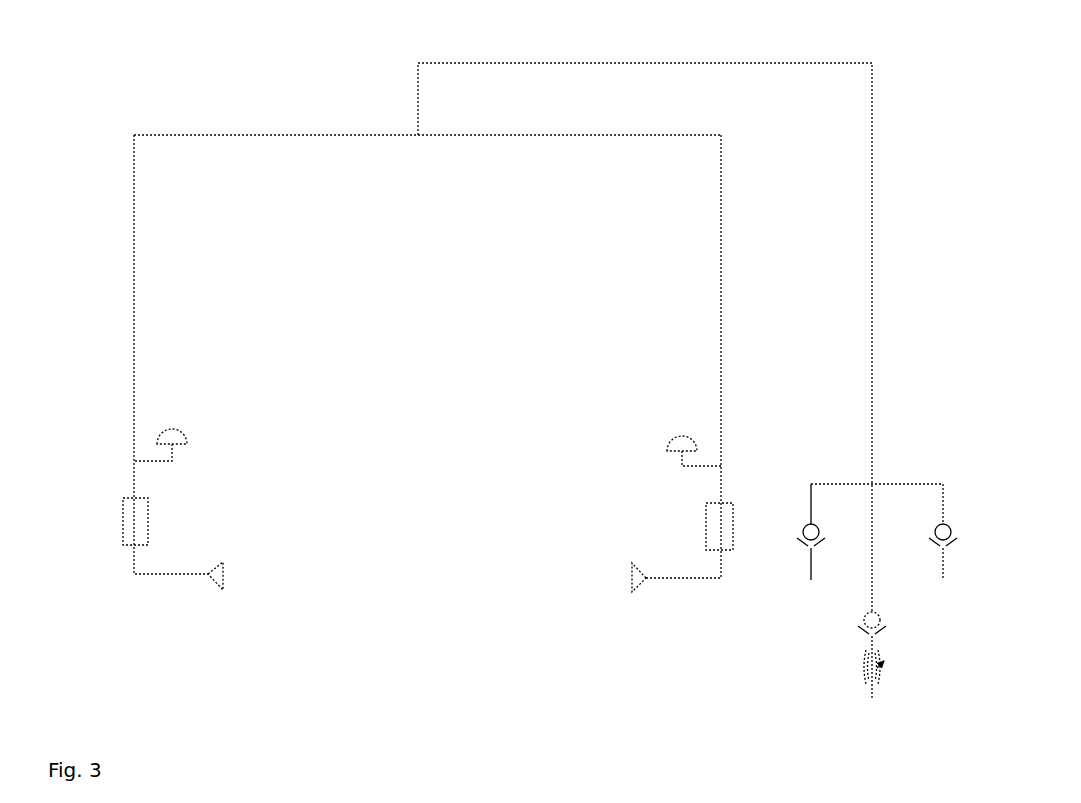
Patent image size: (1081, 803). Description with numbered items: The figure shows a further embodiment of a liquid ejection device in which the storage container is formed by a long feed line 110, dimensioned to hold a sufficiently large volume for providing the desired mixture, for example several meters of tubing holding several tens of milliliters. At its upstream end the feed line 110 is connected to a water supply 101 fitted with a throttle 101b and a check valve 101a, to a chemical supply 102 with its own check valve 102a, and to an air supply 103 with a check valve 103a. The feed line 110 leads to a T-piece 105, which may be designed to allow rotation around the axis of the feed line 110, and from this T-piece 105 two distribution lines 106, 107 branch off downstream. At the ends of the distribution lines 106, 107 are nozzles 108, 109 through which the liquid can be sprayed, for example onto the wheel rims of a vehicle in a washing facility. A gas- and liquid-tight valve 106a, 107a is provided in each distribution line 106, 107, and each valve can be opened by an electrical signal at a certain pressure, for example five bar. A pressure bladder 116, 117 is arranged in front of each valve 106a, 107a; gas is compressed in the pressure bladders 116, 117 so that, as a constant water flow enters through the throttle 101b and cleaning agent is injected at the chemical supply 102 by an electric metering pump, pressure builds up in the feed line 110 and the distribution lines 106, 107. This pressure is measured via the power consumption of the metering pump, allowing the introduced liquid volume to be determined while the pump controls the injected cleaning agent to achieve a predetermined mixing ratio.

The water supply 101 is at (871, 700).
The check valve 101a is at (857, 617).
The throttle 101b is at (866, 668).
The chemical supply 102 is at (951, 590).
The check valve 102a is at (962, 530).
The air supply 103 is at (810, 583).
The check valve 103a is at (800, 530).
The T-piece 105 is at (419, 143).
The distribution line 106 is at (121, 254).
The gas- and liquid-tight valve 106a is at (113, 526).
The distribution line 107 is at (705, 248).
The gas- and liquid-tight valve 107a is at (697, 516).
The nozzle 108 is at (215, 600).
The nozzle 109 is at (620, 598).
The feed line 110 is at (692, 55).
The pressure bladder 116 is at (183, 441).
The pressure bladder 117 is at (668, 442).